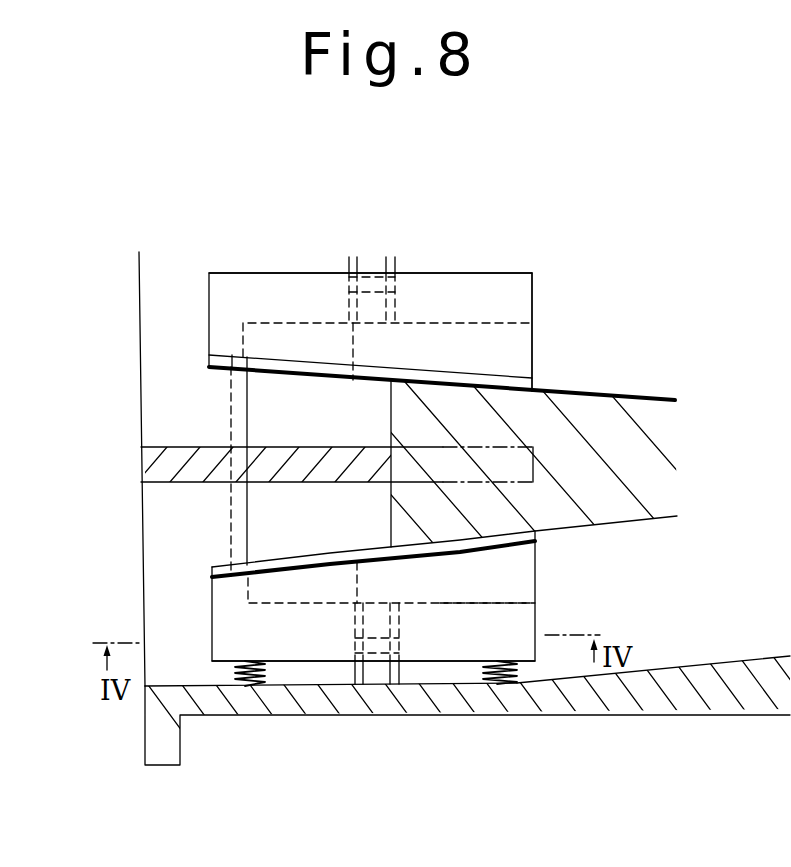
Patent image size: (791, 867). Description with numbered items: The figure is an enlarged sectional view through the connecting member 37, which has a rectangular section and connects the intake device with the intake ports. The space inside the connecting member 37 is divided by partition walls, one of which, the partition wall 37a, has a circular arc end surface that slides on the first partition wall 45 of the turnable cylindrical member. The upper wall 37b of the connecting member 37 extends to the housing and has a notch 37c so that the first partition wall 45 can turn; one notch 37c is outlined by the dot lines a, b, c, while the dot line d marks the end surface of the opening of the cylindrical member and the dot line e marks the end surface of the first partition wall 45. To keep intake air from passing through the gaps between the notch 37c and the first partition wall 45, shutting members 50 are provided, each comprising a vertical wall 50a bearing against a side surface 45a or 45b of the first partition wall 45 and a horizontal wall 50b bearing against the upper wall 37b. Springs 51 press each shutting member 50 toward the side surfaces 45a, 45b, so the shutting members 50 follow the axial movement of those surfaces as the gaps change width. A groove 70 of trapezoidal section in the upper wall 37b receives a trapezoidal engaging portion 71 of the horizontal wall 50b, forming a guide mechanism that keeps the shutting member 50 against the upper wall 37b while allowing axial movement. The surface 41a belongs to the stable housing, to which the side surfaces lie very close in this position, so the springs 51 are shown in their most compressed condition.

The connecting member 37 is at (260, 740).
The partition wall 37a is at (167, 468).
The upper wall 37b is at (168, 605).
The notch 37c is at (510, 352).
The surface of member 41 41a is at (677, 661).
The first partition wall 45 is at (653, 438).
The side surface 45a is at (645, 527).
The side surface 45b is at (600, 392).
The shutting member 50 is at (400, 260).
The vertical wall 50a is at (538, 388).
The horizontal wall 50b is at (470, 290).
The spring 51 is at (243, 665).
The groove 70 is at (372, 262).
The engaging portion 71 is at (405, 272).
The dot line a is at (497, 318).
The dot line b is at (256, 408).
The dot line c is at (444, 612).
The dot line d is at (349, 568).
The dot line e is at (226, 524).